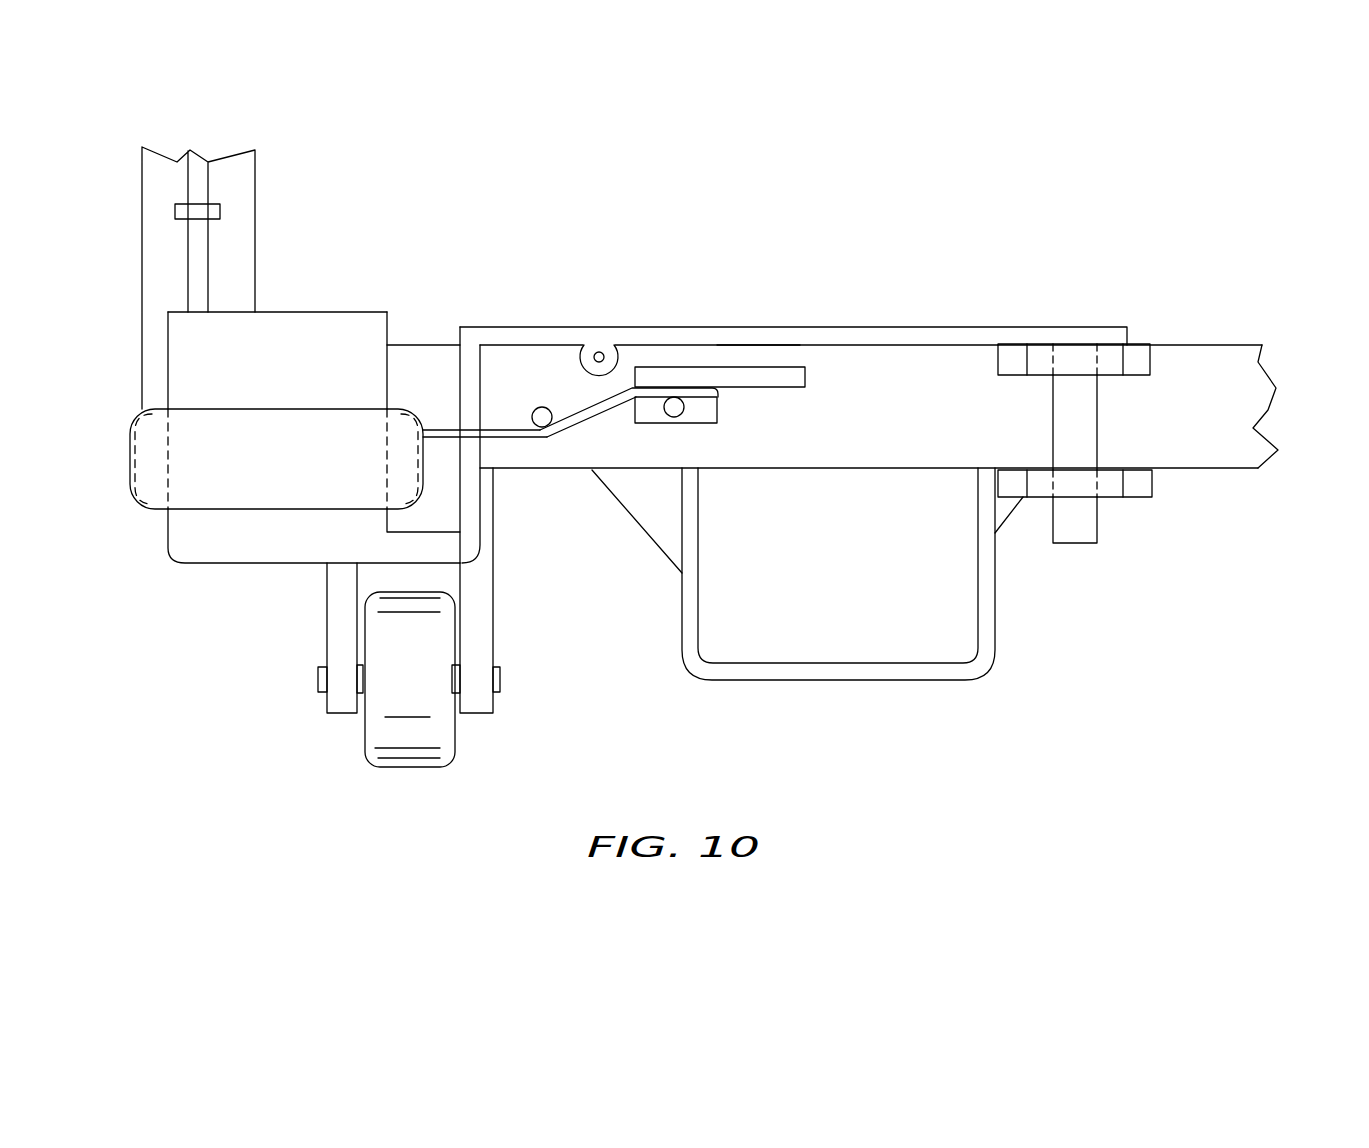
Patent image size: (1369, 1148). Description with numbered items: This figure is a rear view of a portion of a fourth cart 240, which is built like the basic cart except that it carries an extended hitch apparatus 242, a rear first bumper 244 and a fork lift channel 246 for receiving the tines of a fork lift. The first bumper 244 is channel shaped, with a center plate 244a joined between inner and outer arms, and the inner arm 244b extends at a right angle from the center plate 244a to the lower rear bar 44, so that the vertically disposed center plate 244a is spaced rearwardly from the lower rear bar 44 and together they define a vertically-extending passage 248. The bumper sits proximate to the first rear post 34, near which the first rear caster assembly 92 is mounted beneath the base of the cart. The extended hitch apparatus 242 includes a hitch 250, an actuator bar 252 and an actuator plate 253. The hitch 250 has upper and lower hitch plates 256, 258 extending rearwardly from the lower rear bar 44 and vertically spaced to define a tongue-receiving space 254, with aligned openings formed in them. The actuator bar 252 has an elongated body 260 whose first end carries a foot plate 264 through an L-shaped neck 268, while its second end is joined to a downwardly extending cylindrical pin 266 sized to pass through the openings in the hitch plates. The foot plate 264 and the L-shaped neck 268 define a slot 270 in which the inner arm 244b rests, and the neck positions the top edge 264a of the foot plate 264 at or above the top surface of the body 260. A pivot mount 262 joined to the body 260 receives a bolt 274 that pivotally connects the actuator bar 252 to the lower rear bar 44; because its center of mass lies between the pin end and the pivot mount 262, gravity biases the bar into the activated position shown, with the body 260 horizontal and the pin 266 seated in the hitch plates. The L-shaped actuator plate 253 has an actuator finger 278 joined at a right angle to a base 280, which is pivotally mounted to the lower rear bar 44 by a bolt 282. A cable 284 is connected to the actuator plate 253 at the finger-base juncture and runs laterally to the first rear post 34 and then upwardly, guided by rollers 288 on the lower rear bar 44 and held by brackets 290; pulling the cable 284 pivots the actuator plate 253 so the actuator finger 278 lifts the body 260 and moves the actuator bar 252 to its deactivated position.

The first rear post 34 is at (238, 197).
The brackets 290 is at (177, 214).
The foot plate 264 is at (200, 360).
The top edge 264a is at (285, 312).
The first bumper 244 is at (203, 483).
The center plate 244a is at (133, 455).
The inner arm 244b is at (428, 432).
The passage 248 is at (277, 455).
The slot 270 is at (410, 390).
The L-shaped neck 268 is at (467, 517).
The first rear caster assembly 92 is at (352, 768).
The actuator bar 252 is at (772, 327).
The body 260 is at (858, 332).
The bolt 274 is at (598, 338).
The pivot mount 262 is at (606, 357).
The cable 284 is at (655, 388).
The rollers 288 is at (542, 427).
The actuator finger 278 is at (760, 367).
The base 280 is at (700, 410).
The bolt 282 is at (673, 418).
The actuator plate 253 is at (733, 412).
The fourth cart 240 is at (960, 242).
The extended hitch apparatus 242 is at (965, 298).
The fork lift channel 246 is at (948, 683).
The upper hitch plate 256 is at (1143, 360).
The hitch 250 is at (1155, 330).
The lower rear bar 44 is at (1243, 370).
The tongue-receiving space 254 is at (1130, 408).
The pin 266 is at (1083, 432).
The lower hitch plate 258 is at (1129, 488).